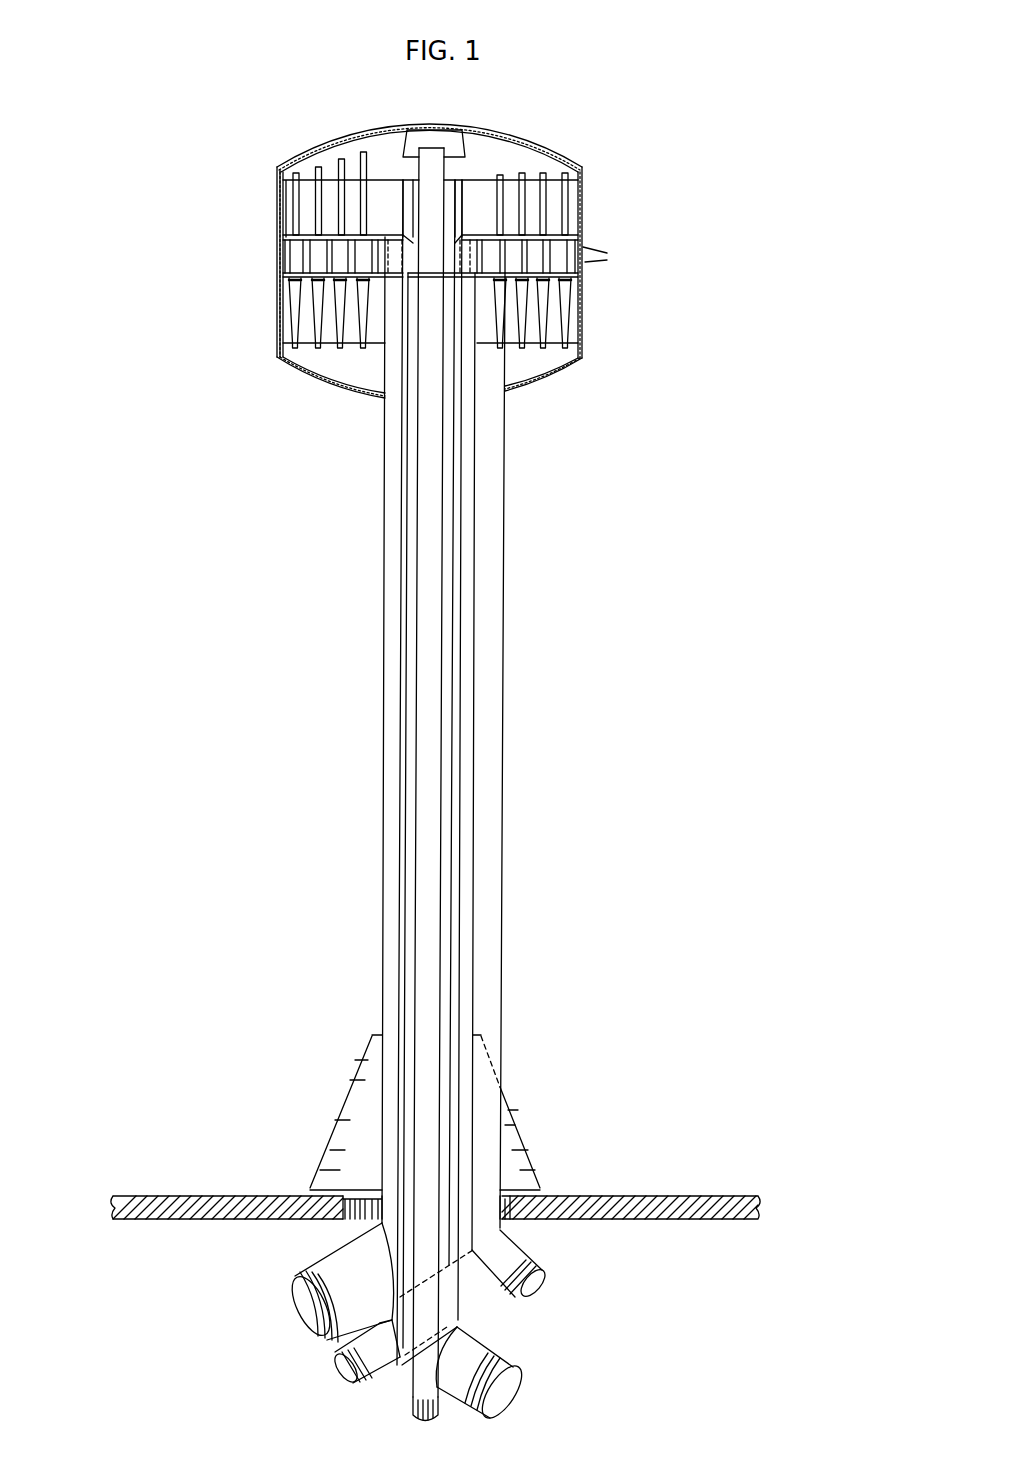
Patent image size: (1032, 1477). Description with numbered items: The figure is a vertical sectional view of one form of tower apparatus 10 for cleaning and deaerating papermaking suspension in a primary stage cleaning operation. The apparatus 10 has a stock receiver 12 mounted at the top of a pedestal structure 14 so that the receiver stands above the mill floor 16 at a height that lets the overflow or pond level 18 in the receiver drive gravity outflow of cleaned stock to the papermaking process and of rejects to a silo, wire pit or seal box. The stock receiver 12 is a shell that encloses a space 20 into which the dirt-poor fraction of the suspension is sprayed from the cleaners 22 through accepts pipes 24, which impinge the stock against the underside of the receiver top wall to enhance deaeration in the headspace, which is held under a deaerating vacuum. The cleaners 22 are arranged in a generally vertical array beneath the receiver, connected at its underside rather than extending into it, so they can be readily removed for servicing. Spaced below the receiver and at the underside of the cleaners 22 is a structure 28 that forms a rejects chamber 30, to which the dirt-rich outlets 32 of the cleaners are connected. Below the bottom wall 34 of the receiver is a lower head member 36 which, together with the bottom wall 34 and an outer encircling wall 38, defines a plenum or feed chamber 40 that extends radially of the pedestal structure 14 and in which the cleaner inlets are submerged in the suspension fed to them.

The apparatus 10 is at (608, 108).
The stock receiver 12 is at (483, 130).
The pedestal structure 14 is at (385, 658).
The mill floor 16 is at (627, 1197).
The overflow or pond level 18 is at (390, 178).
The space 20 is at (485, 178).
The cleaners 22 is at (318, 328).
The accepts pipes 24 is at (540, 173).
The rejects chamber structure 28 is at (548, 377).
The rejects chamber 30 is at (517, 376).
The dirt-rich outlets 32 is at (365, 348).
The bottom wall 34 is at (550, 237).
The lower head member 36 is at (552, 283).
The outer encircling wall 38 is at (278, 242).
The plenum or feed chamber 40 is at (486, 250).